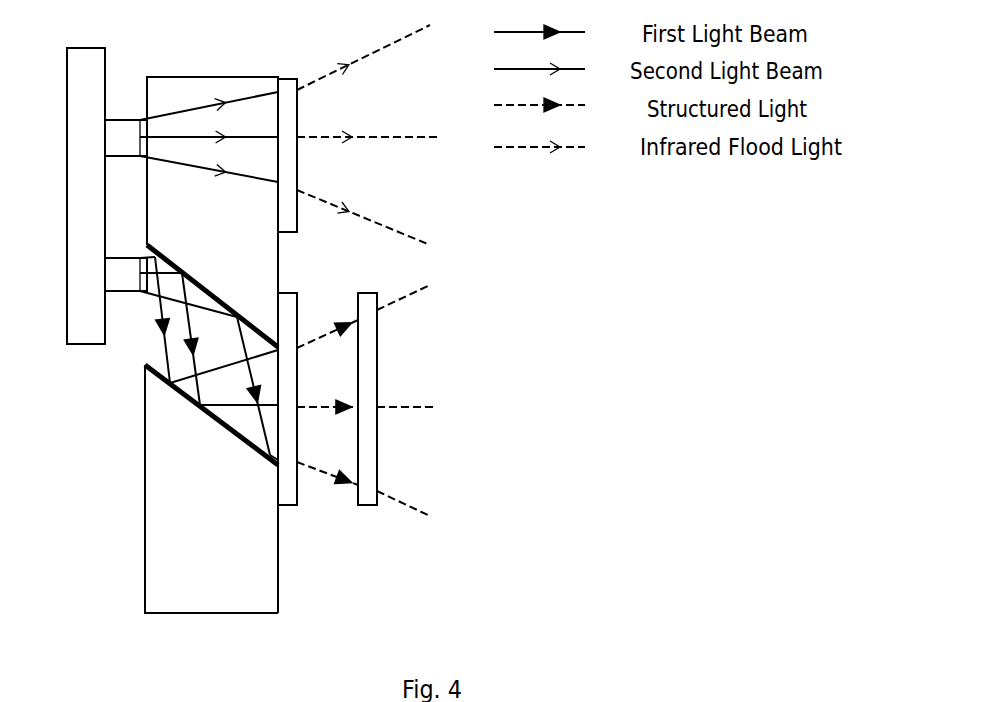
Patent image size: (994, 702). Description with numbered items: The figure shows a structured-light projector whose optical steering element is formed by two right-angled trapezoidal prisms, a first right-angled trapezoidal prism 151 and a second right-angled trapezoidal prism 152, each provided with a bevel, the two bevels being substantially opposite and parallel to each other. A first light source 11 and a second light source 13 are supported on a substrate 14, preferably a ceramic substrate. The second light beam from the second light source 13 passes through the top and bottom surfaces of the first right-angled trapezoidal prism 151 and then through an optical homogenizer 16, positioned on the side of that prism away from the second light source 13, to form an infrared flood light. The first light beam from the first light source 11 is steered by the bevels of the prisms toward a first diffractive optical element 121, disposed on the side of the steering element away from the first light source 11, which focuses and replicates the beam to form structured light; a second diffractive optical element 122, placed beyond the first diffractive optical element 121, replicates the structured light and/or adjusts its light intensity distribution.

The first light source 11 is at (123, 295).
The second light source 13 is at (117, 120).
The substrate 14 is at (85, 345).
The optical homogenizer 16 is at (297, 82).
The first diffractive optical element 121 is at (297, 503).
The second diffractive optical element 122 is at (370, 497).
The first right-angled trapezoidal prism 151 is at (203, 88).
The second right-angled trapezoidal prism 152 is at (143, 500).